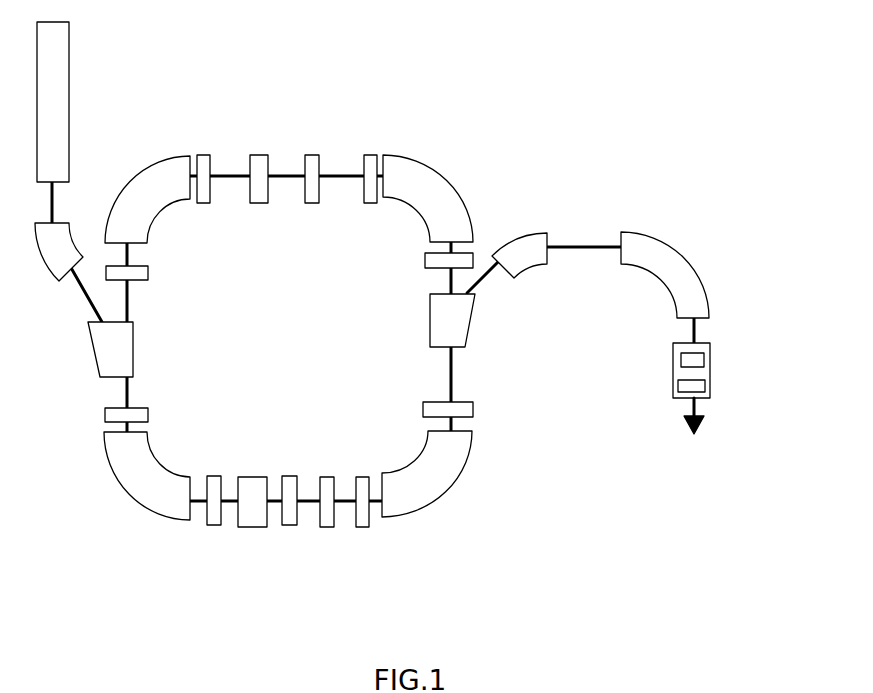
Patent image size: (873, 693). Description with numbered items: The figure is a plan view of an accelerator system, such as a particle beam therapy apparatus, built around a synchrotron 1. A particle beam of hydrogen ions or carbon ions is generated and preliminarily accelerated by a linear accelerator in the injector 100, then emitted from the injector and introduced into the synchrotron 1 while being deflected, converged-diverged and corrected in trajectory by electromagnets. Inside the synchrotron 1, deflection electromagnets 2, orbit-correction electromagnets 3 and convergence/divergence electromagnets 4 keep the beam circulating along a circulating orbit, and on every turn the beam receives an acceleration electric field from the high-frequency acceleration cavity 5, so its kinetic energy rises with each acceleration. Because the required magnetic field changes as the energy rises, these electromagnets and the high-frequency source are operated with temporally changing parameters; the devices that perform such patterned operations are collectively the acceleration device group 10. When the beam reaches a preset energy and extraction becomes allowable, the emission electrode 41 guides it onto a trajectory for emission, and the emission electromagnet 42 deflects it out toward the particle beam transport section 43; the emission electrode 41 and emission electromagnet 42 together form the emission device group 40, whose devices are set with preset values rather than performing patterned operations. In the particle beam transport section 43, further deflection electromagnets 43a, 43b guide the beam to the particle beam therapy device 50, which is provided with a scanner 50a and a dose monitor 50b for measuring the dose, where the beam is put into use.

The synchrotron 1 is at (245, 310).
The deflection electromagnets 2 is at (162, 212).
The orbit-correction electromagnets 3 is at (290, 462).
The convergence/divergence electromagnets 4 is at (213, 462).
The high-frequency acceleration cavity 5 is at (252, 465).
The acceleration device group 10 is at (473, 130).
The emission device group 40 is at (543, 417).
The emission electrode 41 is at (327, 520).
The emission electromagnet 42 is at (475, 318).
The particle beam transport section 43 is at (585, 225).
The deflection electromagnet 43a is at (532, 268).
The deflection electromagnet 43b is at (687, 260).
The particle beam therapy device 50 is at (710, 372).
The scanner 50a is at (700, 357).
The dose monitor 50b is at (683, 385).
The injector 100 is at (69, 58).